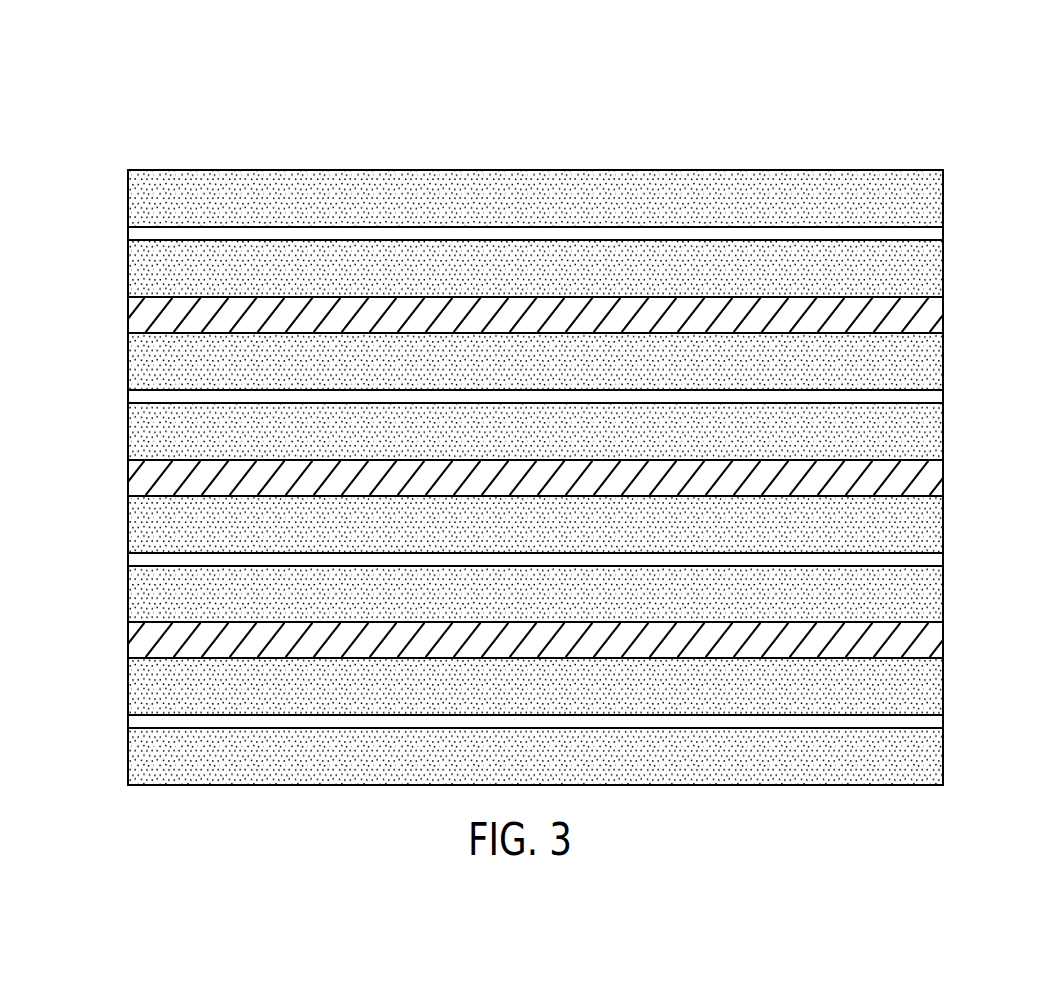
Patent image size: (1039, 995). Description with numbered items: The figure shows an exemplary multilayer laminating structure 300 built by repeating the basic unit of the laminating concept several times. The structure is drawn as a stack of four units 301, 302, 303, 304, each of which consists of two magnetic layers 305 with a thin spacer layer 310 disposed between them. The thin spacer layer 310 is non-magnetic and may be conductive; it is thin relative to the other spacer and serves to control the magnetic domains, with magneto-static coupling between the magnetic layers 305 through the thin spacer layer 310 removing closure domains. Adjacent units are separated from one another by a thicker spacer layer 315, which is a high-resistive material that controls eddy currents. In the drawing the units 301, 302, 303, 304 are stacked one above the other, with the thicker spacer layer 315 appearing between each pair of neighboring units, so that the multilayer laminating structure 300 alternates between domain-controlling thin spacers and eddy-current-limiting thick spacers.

The multilayer laminating structure 300 is at (219, 107).
The unit 301 is at (950, 170).
The unit 302 is at (950, 333).
The unit 303 is at (950, 496).
The unit 304 is at (950, 658).
The magnetic layer 305 is at (133, 201).
The thin spacer layer 310 is at (133, 234).
The thicker spacer layer 315 is at (133, 314).